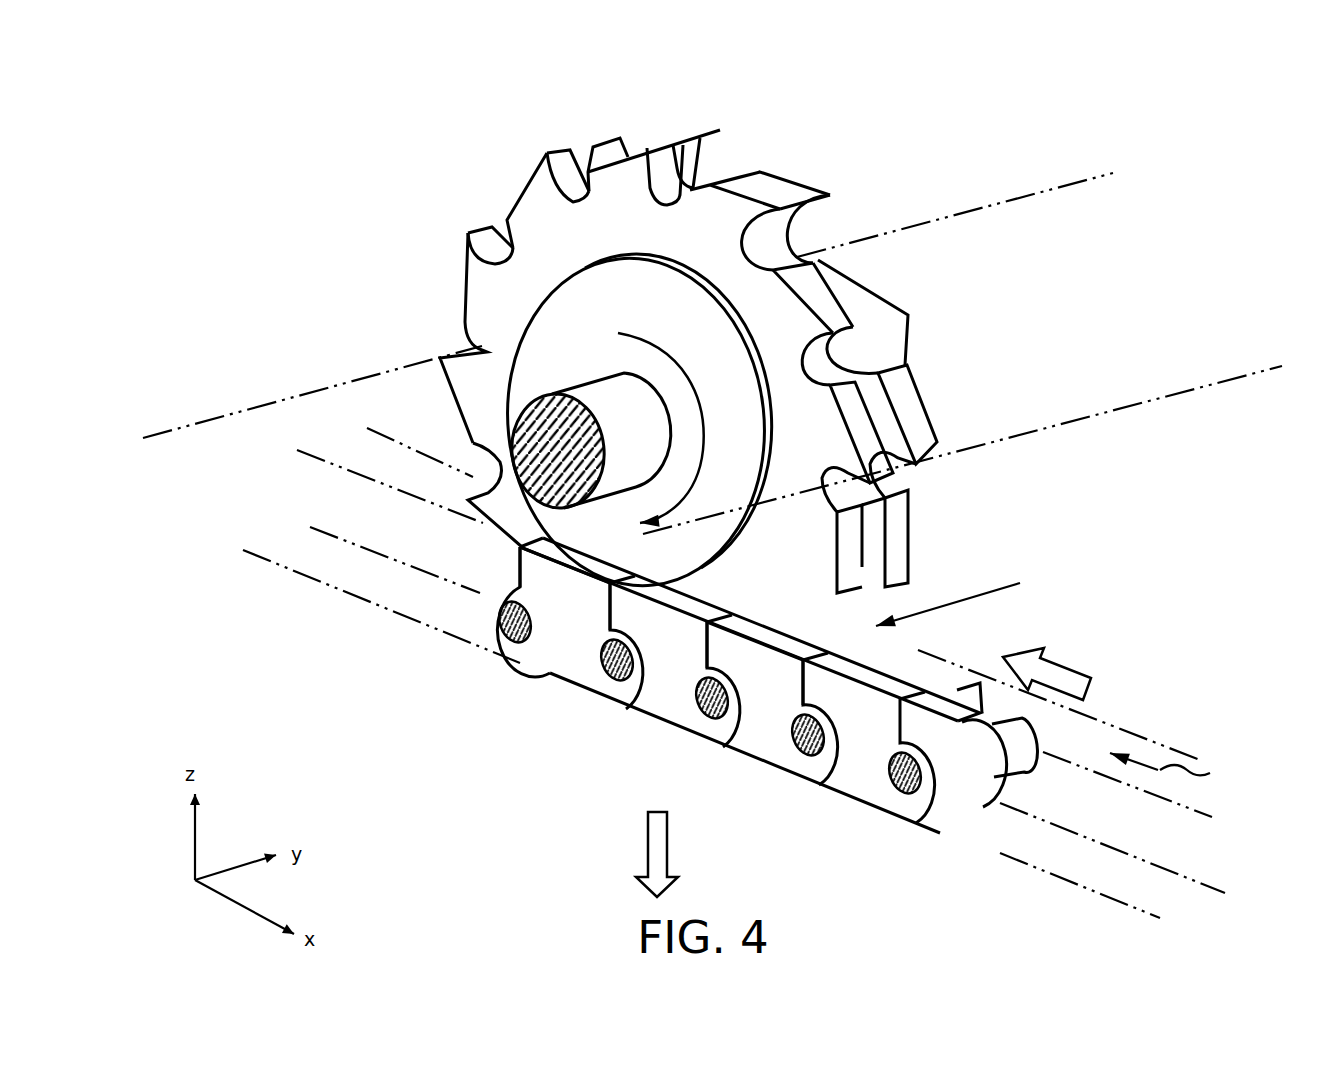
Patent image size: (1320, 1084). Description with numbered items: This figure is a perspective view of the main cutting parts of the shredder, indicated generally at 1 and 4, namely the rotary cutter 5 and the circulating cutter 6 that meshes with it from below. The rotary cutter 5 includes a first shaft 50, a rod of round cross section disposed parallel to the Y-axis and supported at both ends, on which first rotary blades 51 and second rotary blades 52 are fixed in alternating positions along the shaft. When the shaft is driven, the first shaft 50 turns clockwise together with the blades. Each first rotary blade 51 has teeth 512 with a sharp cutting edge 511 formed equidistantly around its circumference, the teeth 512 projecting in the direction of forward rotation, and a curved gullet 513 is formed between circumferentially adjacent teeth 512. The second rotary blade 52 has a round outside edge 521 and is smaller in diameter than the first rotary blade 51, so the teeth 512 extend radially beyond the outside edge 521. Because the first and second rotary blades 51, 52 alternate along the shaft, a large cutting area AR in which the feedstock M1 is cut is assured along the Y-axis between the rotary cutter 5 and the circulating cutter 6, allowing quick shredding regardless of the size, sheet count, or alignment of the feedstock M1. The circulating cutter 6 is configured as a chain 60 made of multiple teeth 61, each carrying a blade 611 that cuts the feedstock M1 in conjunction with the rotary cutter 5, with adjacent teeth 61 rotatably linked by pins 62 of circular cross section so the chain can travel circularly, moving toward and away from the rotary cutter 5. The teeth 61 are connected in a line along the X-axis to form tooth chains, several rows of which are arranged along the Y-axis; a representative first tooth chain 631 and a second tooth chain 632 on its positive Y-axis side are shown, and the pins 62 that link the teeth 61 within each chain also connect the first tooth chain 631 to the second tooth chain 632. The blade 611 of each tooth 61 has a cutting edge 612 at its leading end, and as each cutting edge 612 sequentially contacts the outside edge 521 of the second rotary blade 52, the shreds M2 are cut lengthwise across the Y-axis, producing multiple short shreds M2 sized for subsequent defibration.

The timepiece / movement 1 is at (1214, 93).
The transmission mechanism 4 is at (1189, 146).
The rotary cutter 5 is at (861, 168).
The first shaft 50 is at (572, 376).
The first rotary blade 51 is at (581, 141).
The second rotary blade 52 is at (593, 262).
The cutting edge 511 is at (668, 143).
The teeth 512 is at (630, 167).
The gullet 513 is at (717, 178).
The outside edge 521 is at (771, 433).
The circulating cutter 6 is at (985, 655).
The chain 60 is at (816, 715).
The teeth 61 is at (576, 694).
The blade 611 is at (552, 554).
The cutting edge 612 is at (514, 546).
The pins 62 is at (520, 646).
The first tooth chain 631 is at (956, 820).
The second tooth chain 632 is at (1010, 790).
The cutting area AR is at (968, 597).
The feedstock M1 is at (1056, 663).
The shreds M2 is at (640, 853).